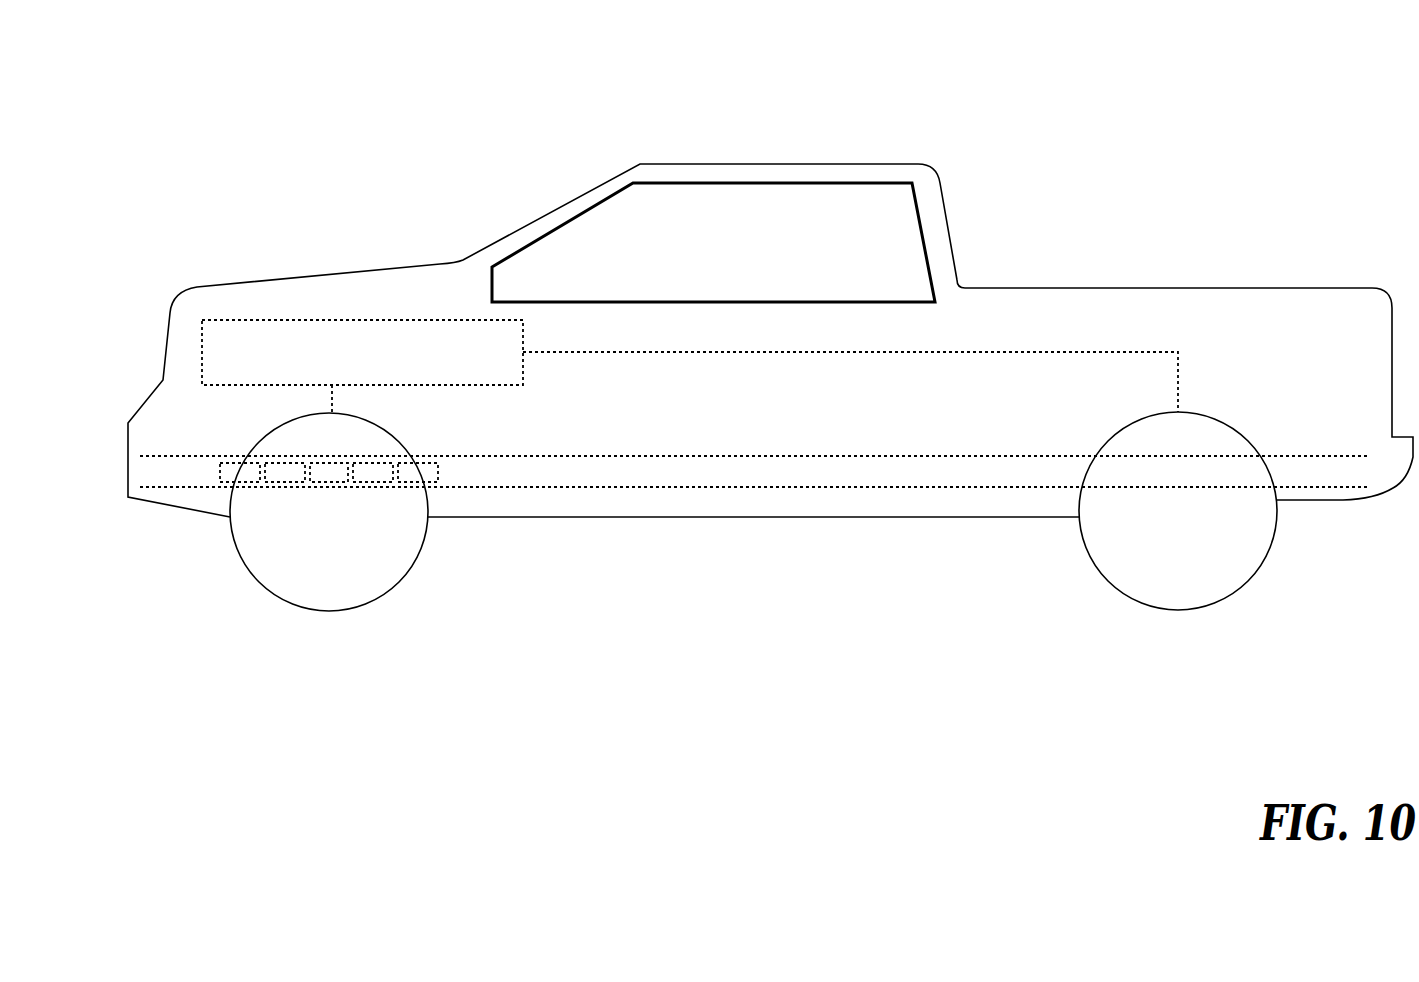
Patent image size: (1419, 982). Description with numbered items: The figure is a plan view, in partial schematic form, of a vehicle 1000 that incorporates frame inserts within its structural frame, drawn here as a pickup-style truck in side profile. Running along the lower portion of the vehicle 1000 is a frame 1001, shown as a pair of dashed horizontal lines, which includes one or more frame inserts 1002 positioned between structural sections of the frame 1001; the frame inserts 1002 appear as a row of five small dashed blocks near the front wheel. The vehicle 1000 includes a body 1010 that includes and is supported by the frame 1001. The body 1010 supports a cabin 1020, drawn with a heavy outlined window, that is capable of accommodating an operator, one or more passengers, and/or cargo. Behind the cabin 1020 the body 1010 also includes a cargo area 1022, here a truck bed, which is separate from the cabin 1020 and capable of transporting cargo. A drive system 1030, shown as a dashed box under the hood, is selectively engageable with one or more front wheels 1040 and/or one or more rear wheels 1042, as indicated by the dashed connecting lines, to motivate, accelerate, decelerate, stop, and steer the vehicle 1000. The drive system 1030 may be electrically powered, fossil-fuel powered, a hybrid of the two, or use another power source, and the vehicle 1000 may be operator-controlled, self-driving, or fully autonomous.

The vehicle 1000 is at (162, 150).
The frame 1001 is at (650, 480).
The frame inserts 1002 is at (350, 468).
The body 1010 is at (341, 270).
The cabin 1020 is at (878, 268).
The cargo area 1022 is at (1222, 328).
The drive system 1030 is at (515, 371).
The front wheels 1040 is at (427, 540).
The rear wheels 1042 is at (1083, 543).